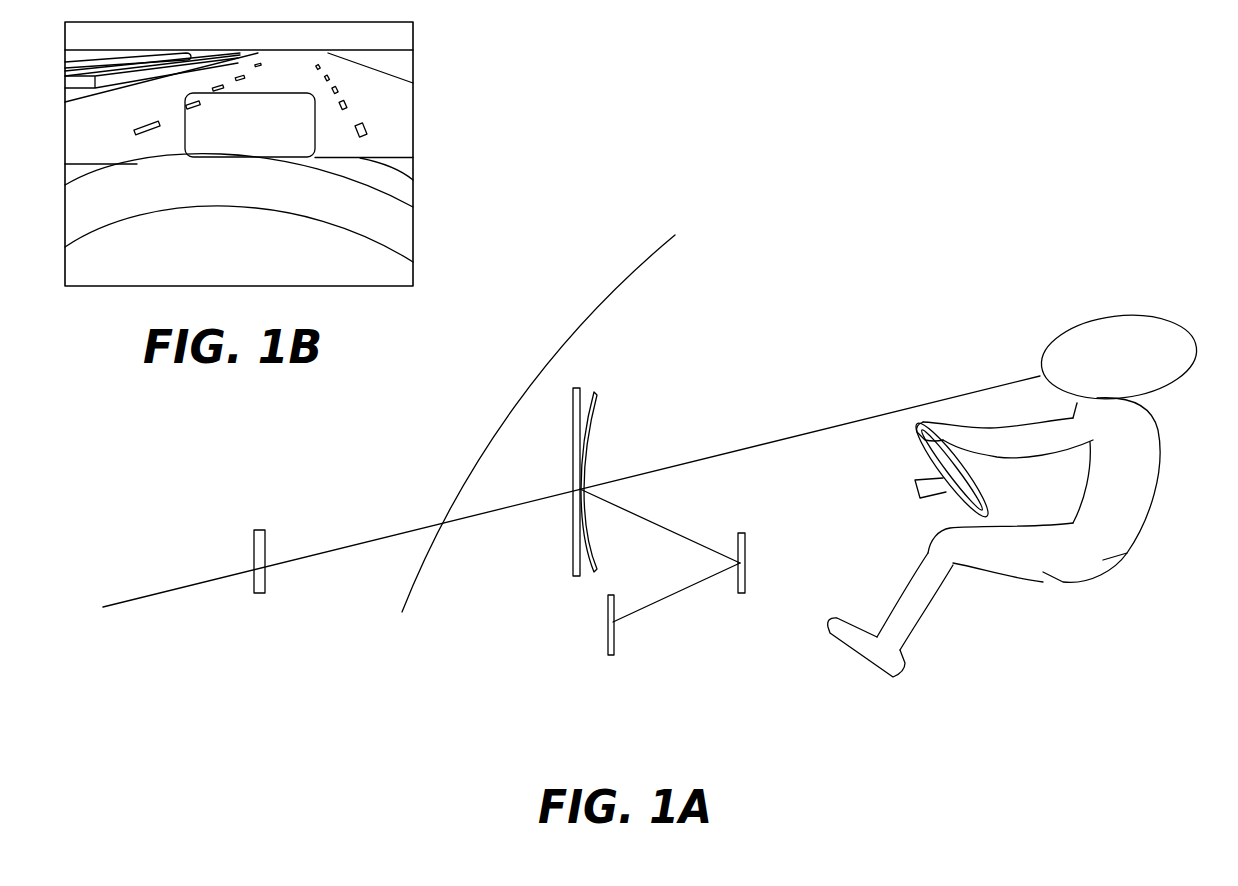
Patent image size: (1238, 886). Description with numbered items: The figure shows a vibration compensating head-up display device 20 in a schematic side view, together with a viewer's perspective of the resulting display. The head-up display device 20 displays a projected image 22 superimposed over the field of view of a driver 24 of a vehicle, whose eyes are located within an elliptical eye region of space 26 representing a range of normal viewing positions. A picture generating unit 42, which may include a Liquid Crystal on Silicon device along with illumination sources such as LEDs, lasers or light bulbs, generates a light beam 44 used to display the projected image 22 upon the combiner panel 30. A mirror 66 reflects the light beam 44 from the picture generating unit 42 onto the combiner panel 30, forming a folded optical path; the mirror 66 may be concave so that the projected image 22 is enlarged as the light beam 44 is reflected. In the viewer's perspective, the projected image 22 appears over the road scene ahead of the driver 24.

In FIG. 1A, the vibration compensating head-up display device 20 is at (921, 166).
In FIG. 1B, the projected image 22 is at (268, 107).
In FIG. 1A, the projected image 22 is at (260, 529).
In FIG. 1A, the driver 24 is at (1147, 417).
In FIG. 1A, the elliptical eye region of space 26 is at (1143, 322).
In FIG. 1A, the combiner panel 30 is at (577, 388).
In FIG. 1A, the picture generating unit 42 is at (607, 622).
In FIG. 1A, the light beam 44 is at (678, 593).
In FIG. 1A, the mirror 66 is at (746, 540).